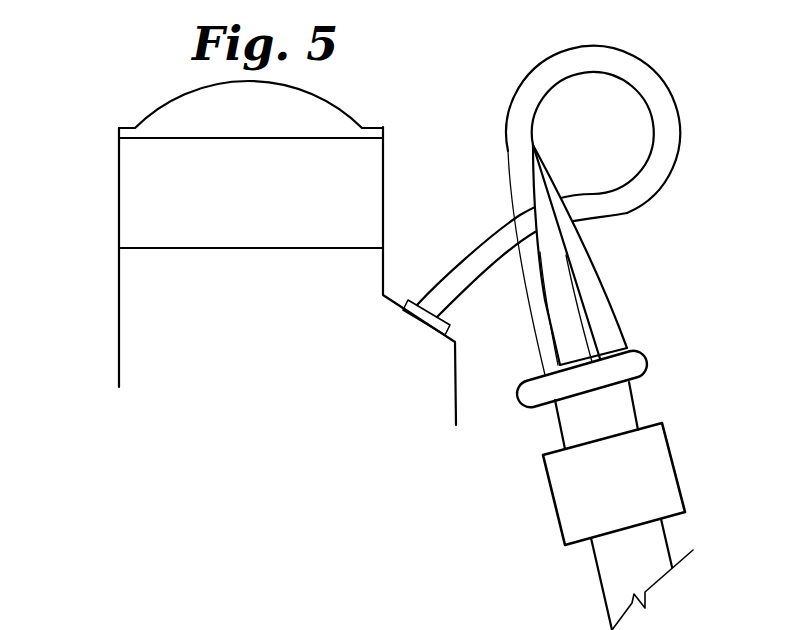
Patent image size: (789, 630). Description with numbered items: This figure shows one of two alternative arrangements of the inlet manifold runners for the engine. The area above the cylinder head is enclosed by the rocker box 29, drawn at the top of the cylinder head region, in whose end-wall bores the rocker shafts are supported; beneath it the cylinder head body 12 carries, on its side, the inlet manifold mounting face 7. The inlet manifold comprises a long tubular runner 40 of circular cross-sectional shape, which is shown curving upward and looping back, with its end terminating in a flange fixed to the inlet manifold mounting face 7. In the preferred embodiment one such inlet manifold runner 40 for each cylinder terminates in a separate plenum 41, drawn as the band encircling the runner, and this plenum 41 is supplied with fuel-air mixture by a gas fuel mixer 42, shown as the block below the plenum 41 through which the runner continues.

The inlet manifold mounting face 7 is at (396, 292).
The housing body 12 is at (110, 330).
The rocker box 29 is at (116, 165).
The inlet manifold runner 40 is at (603, 54).
The plenum 41 is at (528, 412).
The gas fuel mixer 42 is at (565, 513).